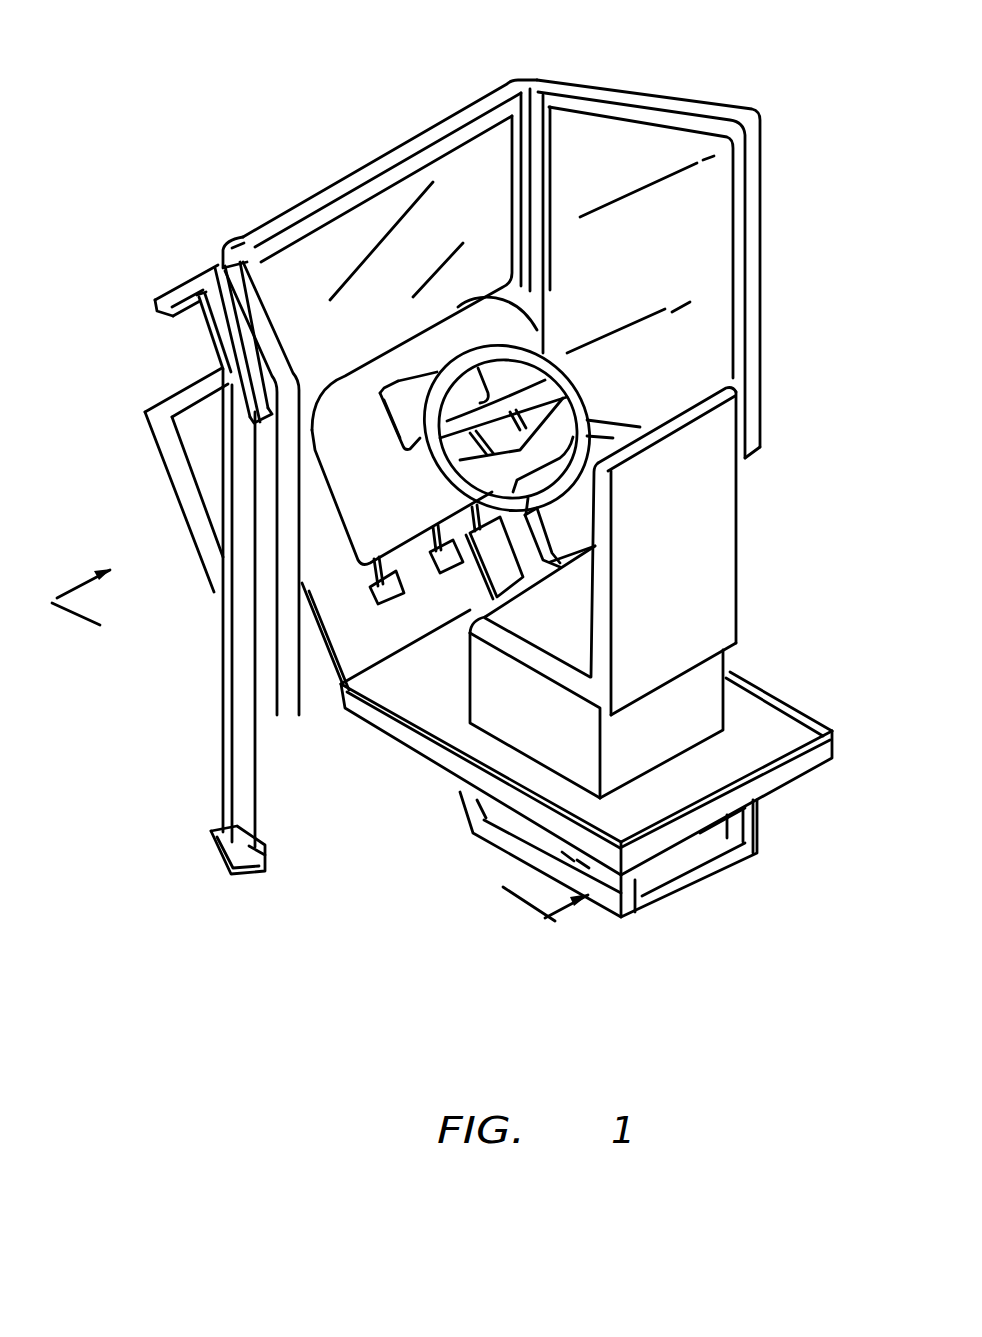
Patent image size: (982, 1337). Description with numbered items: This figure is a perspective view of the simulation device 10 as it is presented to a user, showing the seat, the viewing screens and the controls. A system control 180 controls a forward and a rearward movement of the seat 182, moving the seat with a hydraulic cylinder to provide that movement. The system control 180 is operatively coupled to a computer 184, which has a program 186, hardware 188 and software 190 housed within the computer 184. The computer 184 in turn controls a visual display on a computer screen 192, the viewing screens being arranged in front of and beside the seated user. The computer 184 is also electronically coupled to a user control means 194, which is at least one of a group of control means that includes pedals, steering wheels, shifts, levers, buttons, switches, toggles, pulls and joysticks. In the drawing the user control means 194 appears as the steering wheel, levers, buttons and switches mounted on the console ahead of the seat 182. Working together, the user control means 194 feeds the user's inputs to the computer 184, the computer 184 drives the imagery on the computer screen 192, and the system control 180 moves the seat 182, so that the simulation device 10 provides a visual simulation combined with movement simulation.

The simulation device 10 is at (467, 480).
The system control 180 is at (365, 513).
The seat 182 is at (708, 536).
The computer 184 is at (397, 403).
The program 186 is at (413, 393).
The hardware 188 is at (438, 373).
The software 190 is at (458, 342).
The computer screen 192 is at (300, 290).
The user control means 194 is at (348, 688).